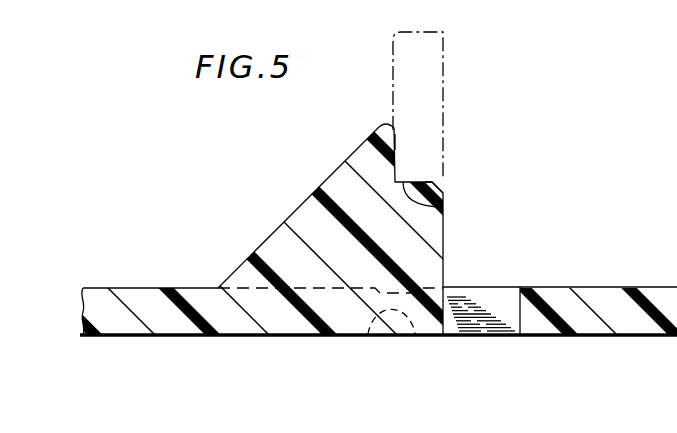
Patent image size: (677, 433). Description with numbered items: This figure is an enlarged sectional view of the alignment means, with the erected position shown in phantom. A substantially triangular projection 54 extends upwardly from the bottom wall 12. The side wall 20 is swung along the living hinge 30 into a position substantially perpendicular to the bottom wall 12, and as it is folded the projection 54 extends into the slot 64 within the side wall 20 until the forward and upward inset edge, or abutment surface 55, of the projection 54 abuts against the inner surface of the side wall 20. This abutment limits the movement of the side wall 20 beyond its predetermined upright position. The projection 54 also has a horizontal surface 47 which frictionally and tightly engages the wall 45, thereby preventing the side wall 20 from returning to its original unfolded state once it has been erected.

The bottom wall 12 is at (112, 305).
The side wall 20 is at (608, 323).
The living hinge 30 is at (383, 337).
The wall 45 is at (514, 317).
The horizontal surface 47 is at (443, 208).
The projection 54 is at (278, 242).
The abutment surface 55 is at (395, 142).
The slot 64 is at (441, 182).